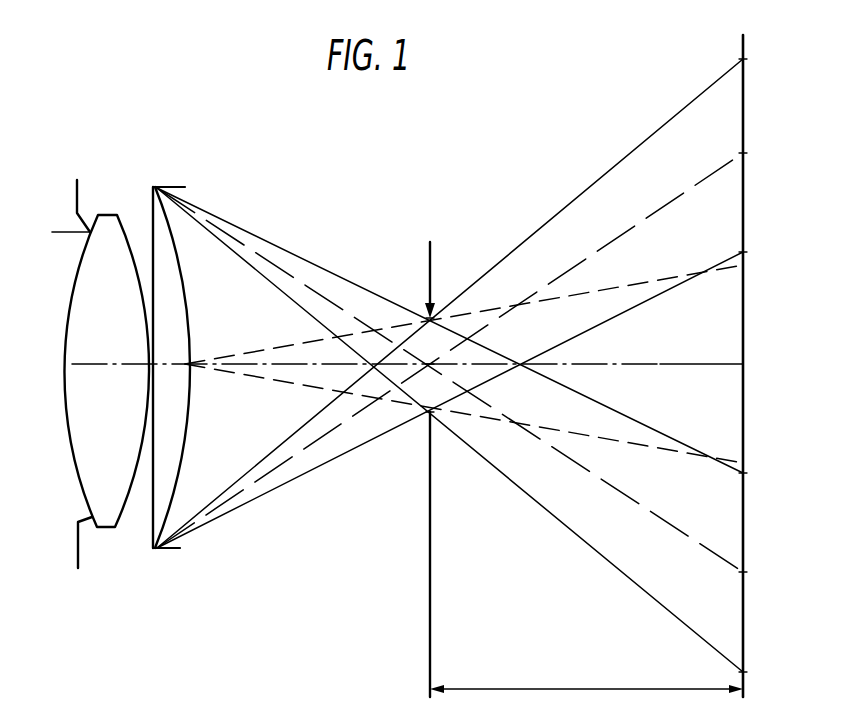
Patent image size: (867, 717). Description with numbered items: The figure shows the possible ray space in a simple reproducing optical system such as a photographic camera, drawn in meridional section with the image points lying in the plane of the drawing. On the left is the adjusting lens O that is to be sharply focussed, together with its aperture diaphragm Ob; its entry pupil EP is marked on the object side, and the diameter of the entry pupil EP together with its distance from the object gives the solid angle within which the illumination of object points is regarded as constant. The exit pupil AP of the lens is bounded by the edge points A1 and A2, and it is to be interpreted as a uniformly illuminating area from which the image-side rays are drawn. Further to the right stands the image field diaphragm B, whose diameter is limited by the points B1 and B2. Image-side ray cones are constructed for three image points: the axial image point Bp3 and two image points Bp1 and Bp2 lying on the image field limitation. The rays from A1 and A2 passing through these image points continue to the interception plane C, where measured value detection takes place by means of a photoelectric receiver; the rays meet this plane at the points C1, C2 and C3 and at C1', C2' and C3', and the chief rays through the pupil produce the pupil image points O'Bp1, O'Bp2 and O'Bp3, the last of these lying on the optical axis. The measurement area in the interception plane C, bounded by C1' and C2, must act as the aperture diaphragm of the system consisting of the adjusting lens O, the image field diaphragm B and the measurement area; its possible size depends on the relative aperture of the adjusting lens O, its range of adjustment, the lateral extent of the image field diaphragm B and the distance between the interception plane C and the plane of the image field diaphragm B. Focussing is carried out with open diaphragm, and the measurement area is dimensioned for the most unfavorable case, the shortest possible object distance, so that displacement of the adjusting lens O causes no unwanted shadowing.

The entry pupil EP is at (65, 222).
The adjusting lens O is at (133, 371).
The aperture diaphragm Ob is at (135, 208).
The exit pupil AP is at (163, 177).
The exit pupil edge point A1 is at (160, 560).
The exit pupil edge point A2 is at (450, 412).
The image field diaphragm B is at (429, 265).
The image field limitation point B1 is at (444, 554).
The image field limitation point B2 is at (444, 280).
The image point Bp1 is at (428, 414).
The image point Bp2 is at (431, 338).
The axial image point Bp3 is at (431, 383).
The interception plane C is at (586, 366).
The ray intercept point C1 is at (757, 673).
The ray intercept point C2 is at (757, 493).
The ray intercept point C3 is at (757, 569).
The ray intercept point C1' is at (759, 250).
The ray intercept point C2' is at (761, 62).
The ray intercept point C3' is at (761, 157).
The pupil image point O'Bp1 is at (492, 421).
The pupil image point O'Bp2 is at (494, 314).
The pupil image point O'Bp3 is at (438, 365).